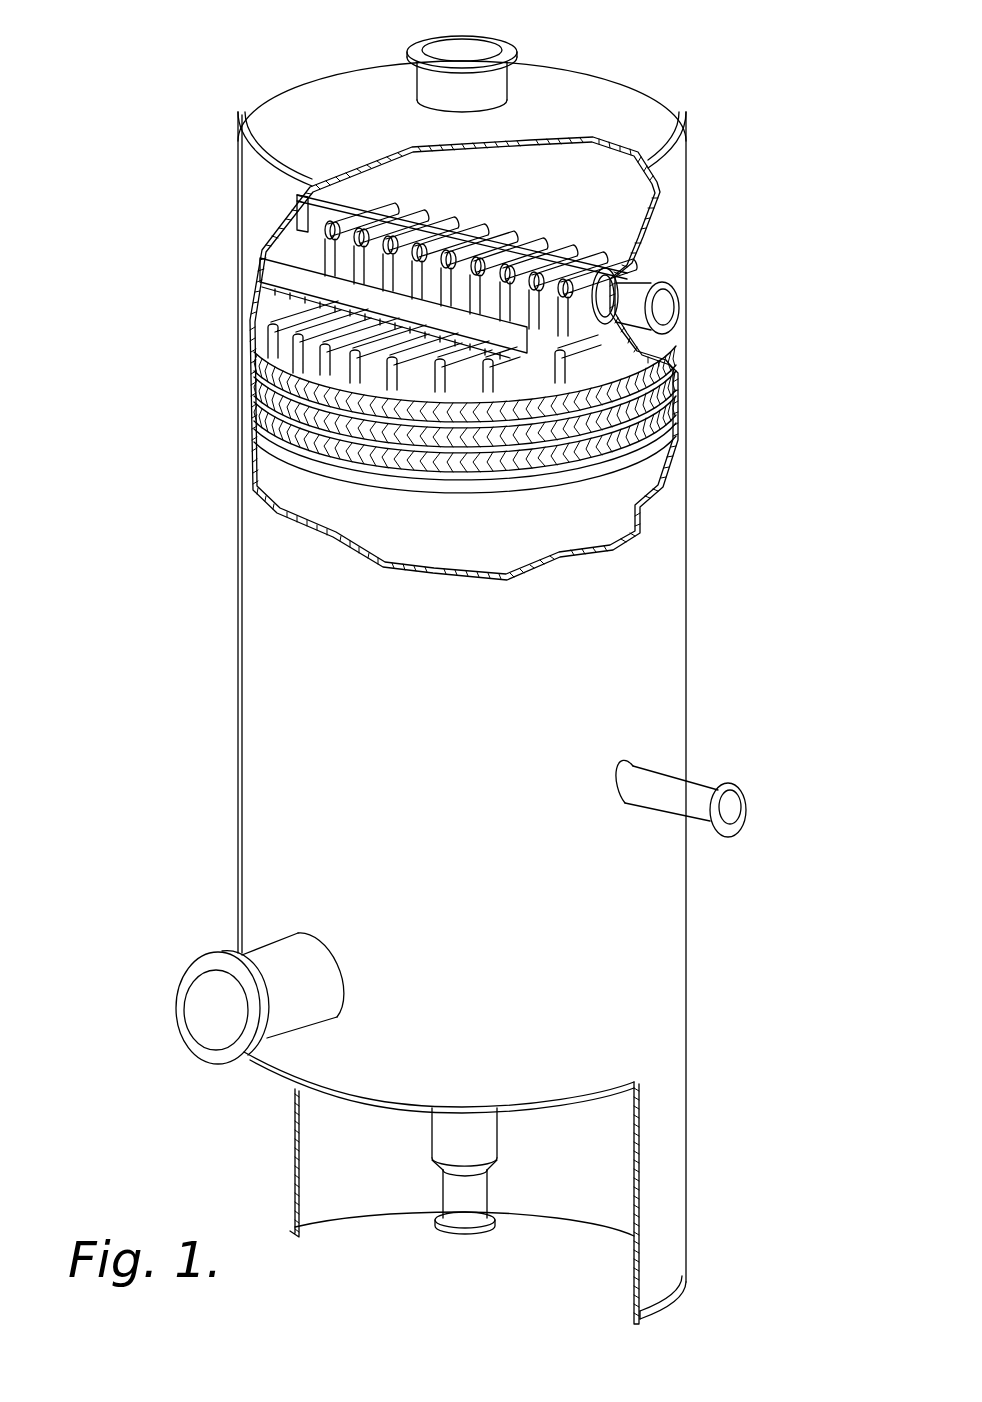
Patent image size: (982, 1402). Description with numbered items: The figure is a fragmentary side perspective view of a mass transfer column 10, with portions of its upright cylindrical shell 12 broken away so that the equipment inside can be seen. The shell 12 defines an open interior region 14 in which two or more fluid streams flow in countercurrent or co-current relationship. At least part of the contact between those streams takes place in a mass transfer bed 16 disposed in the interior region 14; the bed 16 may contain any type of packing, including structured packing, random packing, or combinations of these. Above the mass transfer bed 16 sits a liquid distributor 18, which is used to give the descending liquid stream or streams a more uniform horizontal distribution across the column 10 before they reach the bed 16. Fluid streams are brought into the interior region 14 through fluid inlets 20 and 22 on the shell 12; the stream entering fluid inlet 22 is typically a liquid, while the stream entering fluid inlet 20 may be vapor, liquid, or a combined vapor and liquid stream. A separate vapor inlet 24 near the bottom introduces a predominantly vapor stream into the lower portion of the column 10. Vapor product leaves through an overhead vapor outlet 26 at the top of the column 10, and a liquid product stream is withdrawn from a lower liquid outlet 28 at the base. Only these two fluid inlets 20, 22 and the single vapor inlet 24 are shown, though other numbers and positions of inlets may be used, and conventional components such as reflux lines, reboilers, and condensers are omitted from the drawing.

The mass transfer column 10 is at (182, 152).
The cylindrical shell 12 is at (663, 110).
The interior region 14 is at (598, 492).
The mass transfer bed 16 is at (630, 417).
The liquid distributor 18 is at (610, 223).
The fluid inlet 20 is at (740, 797).
The fluid inlet 22 is at (680, 297).
The vapor inlet 24 is at (205, 966).
The overhead vapor outlet 26 is at (503, 55).
The lower liquid outlet 28 is at (460, 1228).